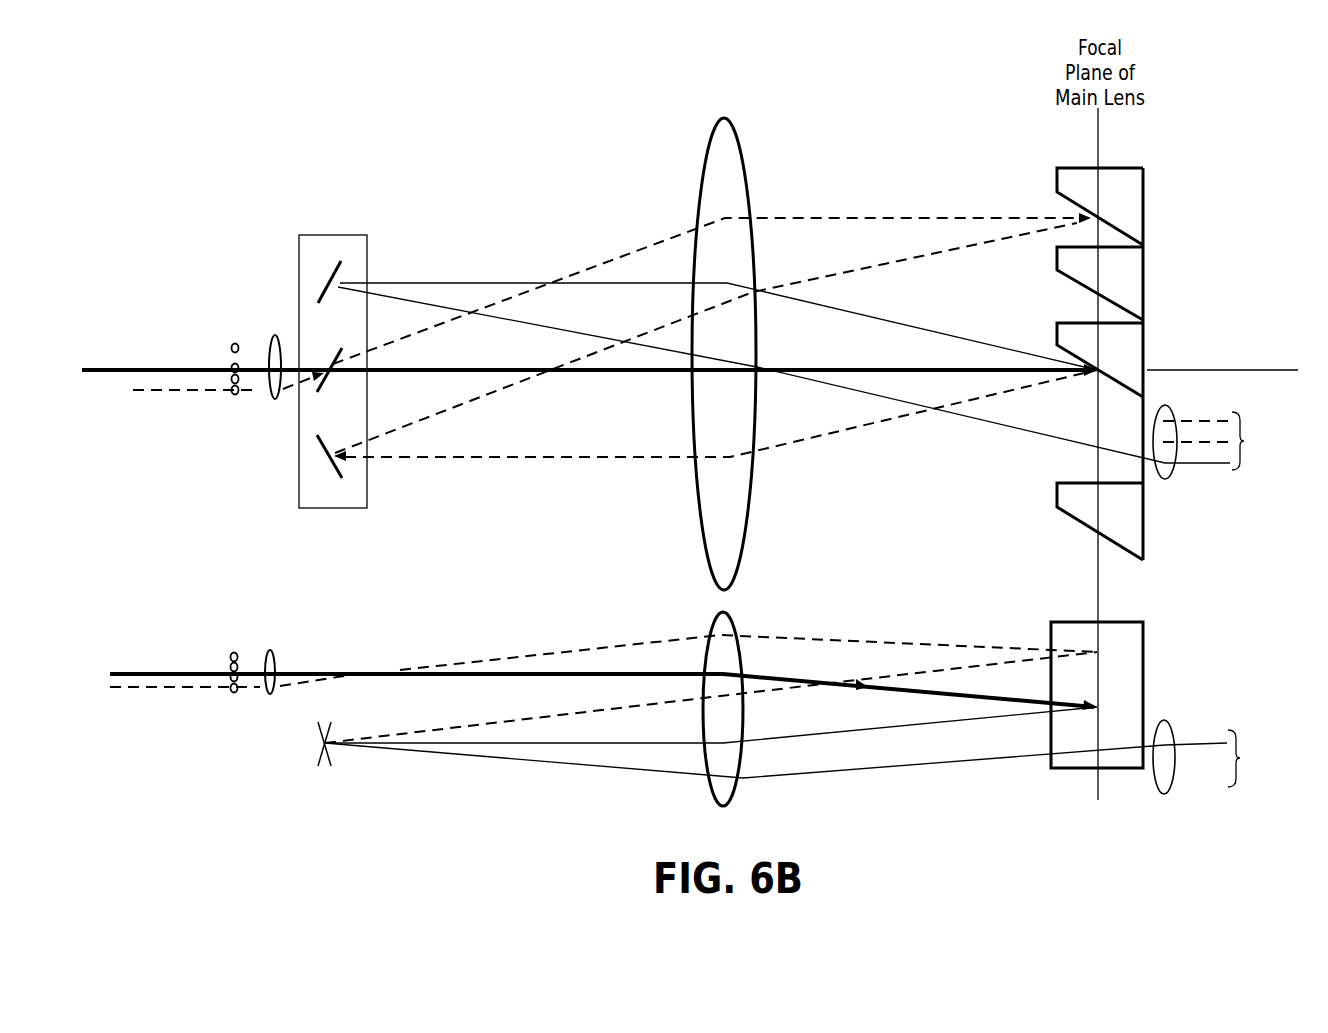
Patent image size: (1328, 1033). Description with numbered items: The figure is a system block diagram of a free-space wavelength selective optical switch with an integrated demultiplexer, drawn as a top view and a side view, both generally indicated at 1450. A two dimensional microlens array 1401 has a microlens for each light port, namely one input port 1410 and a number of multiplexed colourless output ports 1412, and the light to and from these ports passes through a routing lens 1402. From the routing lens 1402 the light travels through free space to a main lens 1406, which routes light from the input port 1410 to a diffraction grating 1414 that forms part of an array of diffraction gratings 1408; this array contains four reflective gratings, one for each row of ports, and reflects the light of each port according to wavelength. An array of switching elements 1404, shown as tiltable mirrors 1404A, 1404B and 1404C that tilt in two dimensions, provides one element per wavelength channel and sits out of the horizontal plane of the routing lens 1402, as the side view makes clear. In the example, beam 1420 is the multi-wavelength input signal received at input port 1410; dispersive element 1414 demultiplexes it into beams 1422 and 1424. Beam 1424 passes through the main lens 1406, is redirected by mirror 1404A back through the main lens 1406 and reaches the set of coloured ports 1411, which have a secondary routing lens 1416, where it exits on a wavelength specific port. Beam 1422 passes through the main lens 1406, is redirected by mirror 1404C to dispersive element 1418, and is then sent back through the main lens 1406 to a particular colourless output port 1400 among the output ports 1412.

The colourless output port 1400 is at (210, 391).
The two dimensional microlens array 1401 is at (168, 233).
The routing lens 1402 is at (297, 632).
The array of switching elements 1404 is at (367, 247).
The tiltable mirror 1404A is at (330, 282).
The tiltable mirror 1404B is at (335, 357).
The tiltable mirror 1404C is at (330, 483).
The main lens 1406 is at (705, 160).
The array of diffraction gratings 1408 is at (1145, 670).
The input port 1410 is at (103, 358).
The set of coloured ports 1411 is at (1229, 599).
The multiplexed output ports 1412 is at (152, 370).
The diffraction grating 1414 is at (1147, 337).
The secondary routing lens 1416 is at (1172, 478).
The dispersive element 1418 is at (1147, 227).
The beam 1420 is at (857, 367).
The beam 1422 is at (867, 424).
The beam 1424 is at (940, 331).
The free-space wavelength selective optical switch with integrated demultiplexer 1450 is at (479, 103).